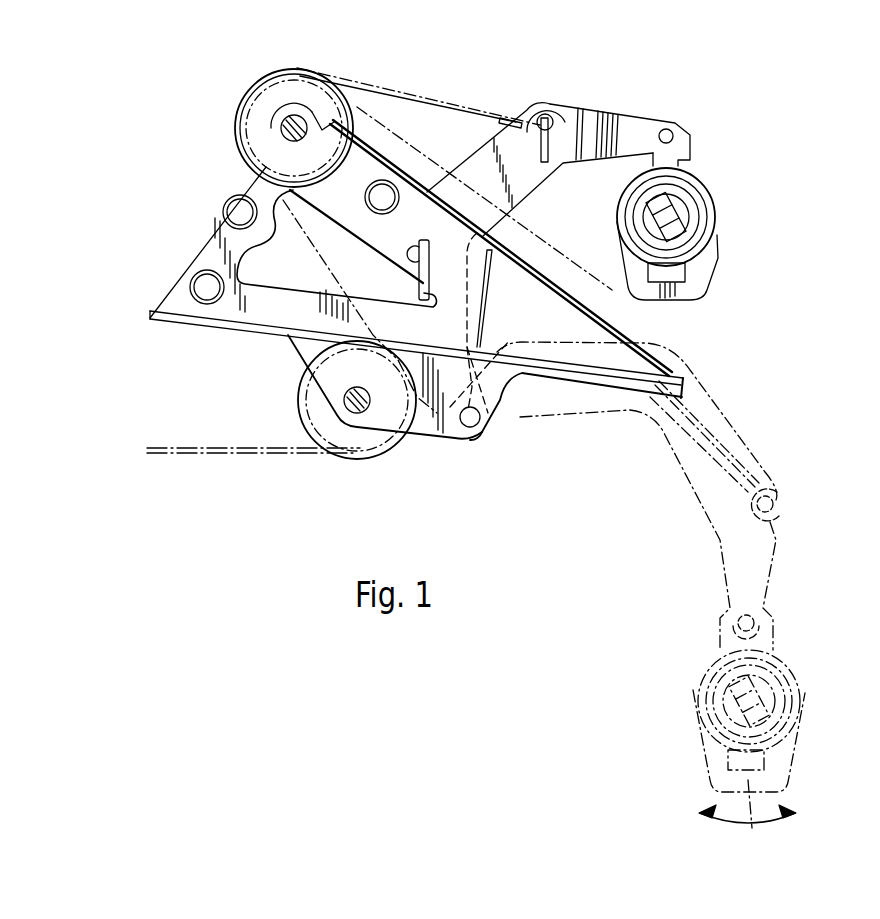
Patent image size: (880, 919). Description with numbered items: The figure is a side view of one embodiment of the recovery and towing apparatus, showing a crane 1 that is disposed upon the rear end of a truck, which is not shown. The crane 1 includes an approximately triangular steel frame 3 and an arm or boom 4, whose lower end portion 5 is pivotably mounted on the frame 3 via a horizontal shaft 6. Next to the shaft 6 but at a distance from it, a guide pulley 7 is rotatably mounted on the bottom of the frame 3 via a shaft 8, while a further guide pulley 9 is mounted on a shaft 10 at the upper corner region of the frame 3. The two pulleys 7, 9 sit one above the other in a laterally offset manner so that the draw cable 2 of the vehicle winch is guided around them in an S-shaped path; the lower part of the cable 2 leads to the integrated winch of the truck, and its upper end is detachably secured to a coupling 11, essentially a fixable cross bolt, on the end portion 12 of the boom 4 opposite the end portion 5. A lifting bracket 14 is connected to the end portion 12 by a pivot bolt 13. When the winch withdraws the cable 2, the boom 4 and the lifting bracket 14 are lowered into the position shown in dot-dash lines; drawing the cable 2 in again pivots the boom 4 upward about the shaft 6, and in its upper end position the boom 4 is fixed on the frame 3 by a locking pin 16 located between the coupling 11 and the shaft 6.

The crane 1 is at (583, 74).
The draw cable 2 is at (465, 98).
The steel frame 3 is at (204, 242).
The boom 4 is at (513, 208).
The lower end portion 5 is at (474, 438).
The horizontal shaft 6 is at (480, 420).
The guide pulley 7 is at (371, 440).
The shaft 8 is at (344, 398).
The further guide pulley 9 is at (291, 87).
The shaft 10 is at (283, 125).
The coupling 11 is at (546, 114).
The end portion 12 is at (625, 122).
The pivot bolt 13 is at (668, 130).
The lifting bracket 14 is at (700, 263).
The locking pin 16 is at (419, 268).